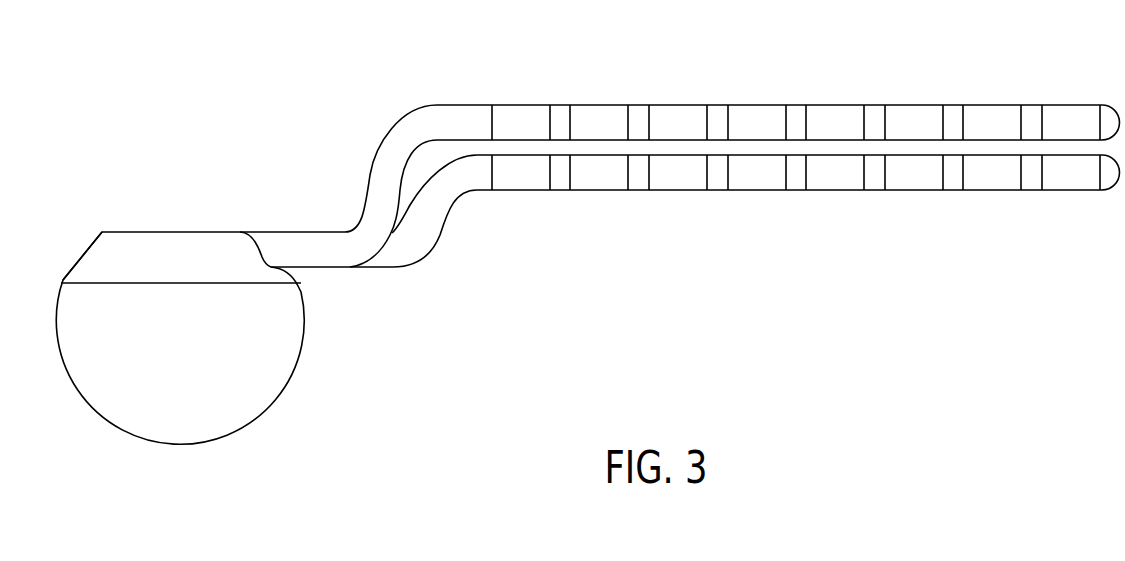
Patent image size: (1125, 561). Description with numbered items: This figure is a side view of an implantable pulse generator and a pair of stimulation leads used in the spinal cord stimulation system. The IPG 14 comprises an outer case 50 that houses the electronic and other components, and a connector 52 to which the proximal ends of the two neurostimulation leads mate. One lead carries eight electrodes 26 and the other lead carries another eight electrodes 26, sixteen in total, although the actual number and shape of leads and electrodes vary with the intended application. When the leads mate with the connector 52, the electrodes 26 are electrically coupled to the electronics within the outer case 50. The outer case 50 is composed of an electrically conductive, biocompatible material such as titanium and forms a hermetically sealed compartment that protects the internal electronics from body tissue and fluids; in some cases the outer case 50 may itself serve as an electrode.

The IPG 14 is at (578, 238).
The electrodes 26 is at (680, 105).
The outer case 50 is at (298, 337).
The connector 52 is at (187, 240).